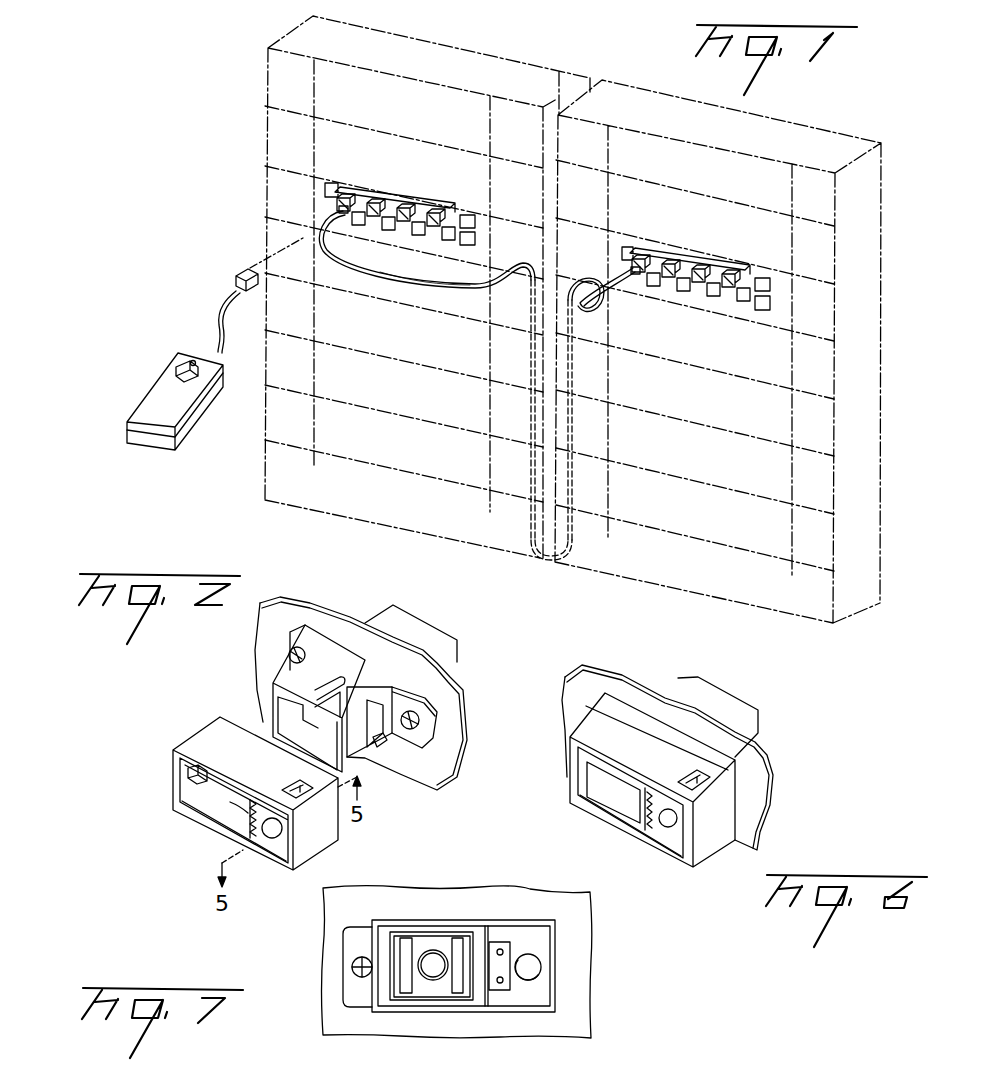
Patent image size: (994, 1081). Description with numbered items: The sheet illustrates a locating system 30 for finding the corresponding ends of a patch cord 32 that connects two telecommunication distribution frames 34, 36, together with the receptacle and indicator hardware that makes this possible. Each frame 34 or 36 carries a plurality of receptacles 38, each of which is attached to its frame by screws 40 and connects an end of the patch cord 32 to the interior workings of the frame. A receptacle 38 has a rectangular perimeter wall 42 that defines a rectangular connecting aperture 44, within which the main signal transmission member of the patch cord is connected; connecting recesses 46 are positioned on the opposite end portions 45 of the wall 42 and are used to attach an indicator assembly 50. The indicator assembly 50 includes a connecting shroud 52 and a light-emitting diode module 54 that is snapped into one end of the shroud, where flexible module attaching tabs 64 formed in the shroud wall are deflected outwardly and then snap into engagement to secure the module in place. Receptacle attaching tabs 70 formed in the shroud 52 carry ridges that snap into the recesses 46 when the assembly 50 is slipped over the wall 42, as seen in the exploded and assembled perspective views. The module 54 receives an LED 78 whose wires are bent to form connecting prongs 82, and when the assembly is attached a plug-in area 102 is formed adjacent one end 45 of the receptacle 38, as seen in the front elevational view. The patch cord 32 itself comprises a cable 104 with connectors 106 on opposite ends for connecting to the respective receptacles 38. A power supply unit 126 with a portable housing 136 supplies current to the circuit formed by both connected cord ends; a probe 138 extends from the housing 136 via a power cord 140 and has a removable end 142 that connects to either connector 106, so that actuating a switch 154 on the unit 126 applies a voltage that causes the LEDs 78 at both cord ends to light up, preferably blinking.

In FIG. 1, the locating system 30 is at (308, 191).
In FIG. 1, the patch cord 32 is at (469, 295).
In FIG. 1, the telecommunication distribution frame 34 is at (420, 38).
In FIG. 2, the telecommunication distribution frame 34 is at (467, 722).
In FIG. 6, the telecommunication distribution frame 34 is at (770, 757).
In FIG. 7, the telecommunication distribution frame 34 is at (592, 1038).
In FIG. 1, the telecommunication distribution frame 36 is at (790, 118).
In FIG. 1, the receptacle 38 is at (375, 197).
In FIG. 2, the receptacle 38 is at (331, 645).
In FIG. 6, the receptacle 38 is at (642, 710).
In FIG. 7, the receptacle 38 is at (405, 928).
In FIG. 2, the screw 40 is at (412, 730).
In FIG. 2, the perimeter wall 42 is at (270, 690).
In FIG. 2, the connecting aperture 44 is at (318, 726).
In FIG. 2, the end portion 45 is at (353, 721).
In FIG. 2, the connecting recess 46 is at (382, 741).
In FIG. 2, the indicator assembly 50 is at (178, 825).
In FIG. 6, the indicator assembly 50 is at (730, 858).
In FIG. 7, the indicator assembly 50 is at (573, 994).
In FIG. 2, the connecting shroud 52 is at (205, 838).
In FIG. 6, the connecting shroud 52 is at (560, 759).
In FIG. 7, the connecting shroud 52 is at (377, 1018).
In FIG. 2, the light-emitting diode module 54 is at (282, 843).
In FIG. 6, the light-emitting diode module 54 is at (678, 842).
In FIG. 2, the module attaching tab 64 is at (315, 795).
In FIG. 6, the module attaching tab 64 is at (690, 776).
In FIG. 2, the receptacle attaching tab 70 is at (186, 777).
In FIG. 2, the LED 78 is at (270, 833).
In FIG. 6, the LED 78 is at (668, 823).
In FIG. 7, the LED 78 is at (532, 964).
In FIG. 2, the connecting prong 82 is at (248, 818).
In FIG. 6, the connecting prong 82 is at (647, 800).
In FIG. 7, the connecting prong 82 is at (500, 977).
In FIG. 7, the plug-in area 102 is at (493, 928).
In FIG. 1, the cable 104 is at (422, 285).
In FIG. 1, the connector 106 is at (340, 210).
In FIG. 1, the power supply unit 126 is at (146, 390).
In FIG. 1, the portable housing 136 is at (170, 360).
In FIG. 1, the probe 138 is at (220, 277).
In FIG. 1, the power cord 140 is at (215, 315).
In FIG. 1, the removable end 142 is at (243, 268).
In FIG. 1, the switch 154 is at (192, 373).